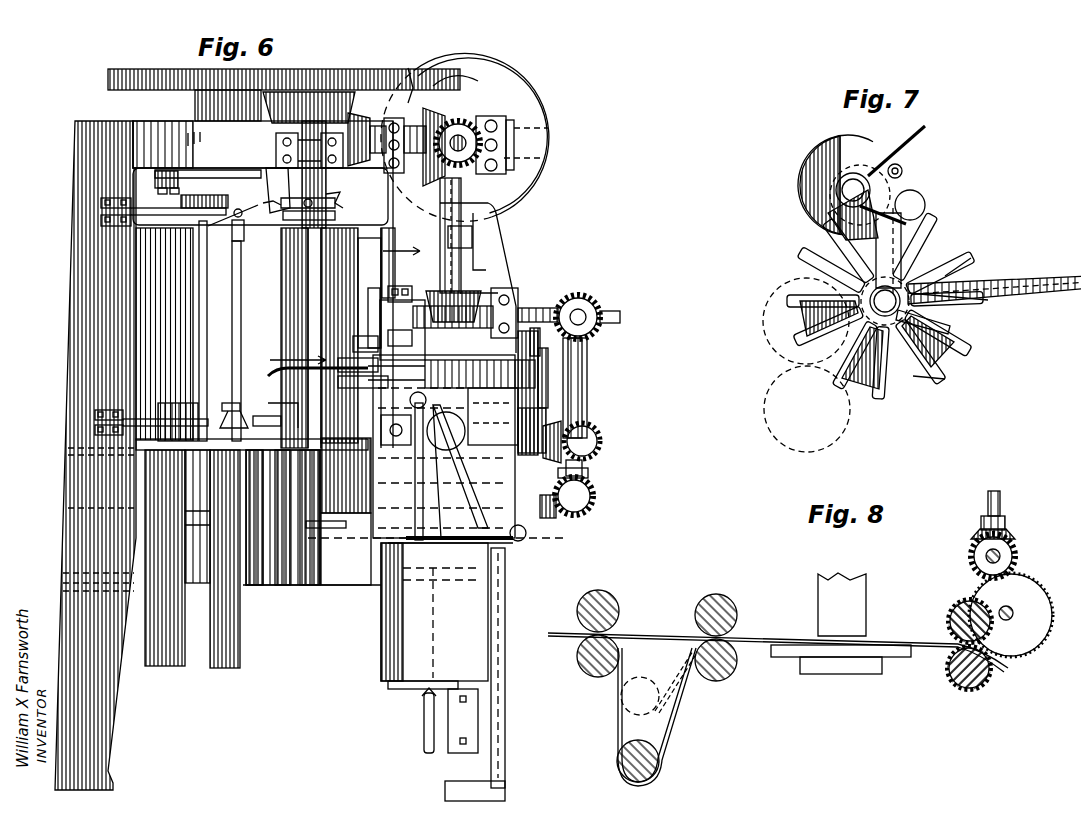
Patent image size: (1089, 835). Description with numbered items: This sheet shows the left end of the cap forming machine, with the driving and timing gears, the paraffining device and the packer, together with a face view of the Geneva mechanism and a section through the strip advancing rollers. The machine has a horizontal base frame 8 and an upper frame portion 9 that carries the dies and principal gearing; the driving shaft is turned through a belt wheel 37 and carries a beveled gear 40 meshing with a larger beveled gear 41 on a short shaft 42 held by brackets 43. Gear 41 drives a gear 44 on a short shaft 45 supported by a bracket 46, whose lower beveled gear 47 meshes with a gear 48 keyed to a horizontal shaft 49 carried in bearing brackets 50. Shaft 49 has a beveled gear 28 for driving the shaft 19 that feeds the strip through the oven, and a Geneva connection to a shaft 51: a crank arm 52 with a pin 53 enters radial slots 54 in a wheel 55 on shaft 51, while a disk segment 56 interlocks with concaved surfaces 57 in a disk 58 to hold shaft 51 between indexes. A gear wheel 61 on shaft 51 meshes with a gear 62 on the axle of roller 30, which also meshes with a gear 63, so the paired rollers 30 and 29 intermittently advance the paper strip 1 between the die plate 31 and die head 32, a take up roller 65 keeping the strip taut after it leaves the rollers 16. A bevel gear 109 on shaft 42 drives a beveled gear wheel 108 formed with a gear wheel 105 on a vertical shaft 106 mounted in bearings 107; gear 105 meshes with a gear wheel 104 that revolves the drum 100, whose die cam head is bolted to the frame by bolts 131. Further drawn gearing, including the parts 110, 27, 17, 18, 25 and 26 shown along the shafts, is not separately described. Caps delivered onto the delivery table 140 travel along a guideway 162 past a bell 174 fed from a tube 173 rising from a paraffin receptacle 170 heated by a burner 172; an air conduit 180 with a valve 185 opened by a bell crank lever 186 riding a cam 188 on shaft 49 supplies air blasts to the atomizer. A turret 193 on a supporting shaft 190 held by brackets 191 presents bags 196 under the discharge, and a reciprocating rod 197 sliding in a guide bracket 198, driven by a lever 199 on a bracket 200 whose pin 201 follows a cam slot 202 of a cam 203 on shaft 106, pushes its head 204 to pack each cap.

In FIG. 6, the gear wheel 104 is at (118, 60).
In FIG. 6, the gear wheel 105 is at (306, 59).
In FIG. 6, the beveled gear wheel 108 is at (205, 98).
In FIG. 6, the vertical shaft 106 is at (295, 243).
In FIG. 6, the upper frame portion 9 is at (67, 132).
In FIG. 6, the drum 100 is at (150, 339).
In FIG. 6, the bearing 107 is at (268, 134).
In FIG. 6, the bracket 200 is at (262, 178).
In FIG. 6, the pin 201 is at (316, 190).
In FIG. 6, the cam slot 202 is at (329, 204).
In FIG. 6, the cam 203 is at (333, 186).
In FIG. 6, the bolts 131 is at (153, 181).
In FIG. 6, the bracket 191 is at (125, 212).
In FIG. 6, the lever 199 is at (228, 207).
In FIG. 6, the reciprocating rod 197 is at (224, 260).
In FIG. 6, the supporting shaft 190 is at (191, 288).
In FIG. 6, the disk segment 56 is at (350, 286).
In FIG. 7, the disk segment 56 is at (820, 136).
In FIG. 6, the crank arm 52 is at (345, 308).
In FIG. 7, the crank arm 52 is at (894, 154).
In FIG. 6, the pin 53 is at (348, 331).
In FIG. 7, the pin 53 is at (917, 191).
In FIG. 6, the disk 58 is at (330, 354).
In FIG. 7, the disk 58 is at (935, 271).
In FIG. 6, the wheel 55 is at (335, 374).
In FIG. 7, the wheel 55 is at (895, 298).
In FIG. 6, the head 204 is at (225, 401).
In FIG. 6, the guide bracket 198 is at (240, 416).
In FIG. 6, the bell 174 is at (290, 408).
In FIG. 6, the turret 193 is at (100, 421).
In FIG. 6, the bags 196 is at (137, 467).
In FIG. 6, the guideway 162 is at (232, 516).
In FIG. 6, the delivery table 140 is at (338, 521).
In FIG. 6, the base frame 8 is at (340, 594).
In FIG. 6, the bevel gear 109 is at (420, 69).
In FIG. 6, the gear 110 is at (470, 73).
In FIG. 6, the belt wheel 37 is at (520, 96).
In FIG. 6, the beveled gear 41 is at (437, 116).
In FIG. 6, the beveled gear 40 is at (502, 143).
In FIG. 6, the bracket 43 is at (498, 111).
In FIG. 6, the short shaft 42 is at (545, 139).
In FIG. 6, the gear 44 is at (455, 181).
In FIG. 6, the short shaft 45 is at (453, 226).
In FIG. 8, the short shaft 45 is at (993, 493).
In FIG. 6, the bracket 46 is at (470, 238).
In FIG. 6, the beveled gear 47 is at (460, 280).
In FIG. 8, the beveled gear 47 is at (1005, 527).
In FIG. 6, the bearing bracket 50 is at (500, 279).
In FIG. 6, the bell crank lever 186 is at (390, 306).
In FIG. 7, the bell crank lever 186 is at (1038, 262).
In FIG. 6, the cam 188 is at (430, 302).
In FIG. 7, the cam 188 is at (894, 169).
In FIG. 6, the shaft 51 is at (470, 351).
In FIG. 7, the shaft 51 is at (892, 293).
In FIG. 6, the beveled gear 48 is at (508, 299).
In FIG. 8, the beveled gear 48 is at (1007, 548).
In FIG. 6, the horizontal shaft 49 is at (590, 299).
In FIG. 7, the horizontal shaft 49 is at (833, 177).
In FIG. 6, the shaft 27 is at (612, 306).
In FIG. 6, the beveled gear 28 is at (574, 330).
In FIG. 6, the gear 63 is at (532, 348).
In FIG. 8, the gear 63 is at (985, 608).
In FIG. 6, the feed roller 30 is at (530, 365).
In FIG. 7, the feed roller 30 is at (760, 318).
In FIG. 8, the feed roller 30 is at (940, 598).
In FIG. 6, the gear wheel 61 is at (545, 371).
In FIG. 8, the gear wheel 61 is at (968, 576).
In FIG. 6, the shaft 19 is at (579, 391).
In FIG. 6, the bevel gear 17 is at (556, 415).
In FIG. 6, the bevel gear 18 is at (590, 425).
In FIG. 6, the gear 62 is at (591, 460).
In FIG. 8, the gear 62 is at (965, 670).
In FIG. 6, the bevel gear 25 is at (585, 488).
In FIG. 6, the bevel gear 26 is at (538, 510).
In FIG. 6, the tube 173 is at (410, 465).
In FIG. 6, the valve 185 is at (455, 446).
In FIG. 6, the air conduit 180 is at (430, 501).
In FIG. 6, the receptacle 170 is at (395, 636).
In FIG. 6, the burner 172 is at (416, 708).
In FIG. 7, the slots 54 is at (900, 221).
In FIG. 7, the concaved surfaces 57 is at (945, 246).
In FIG. 8, the roller 16 is at (575, 667).
In FIG. 8, the feed roller 29 is at (729, 604).
In FIG. 8, the take up roller 65 is at (652, 748).
In FIG. 8, the strip 1 is at (698, 680).
In FIG. 8, the die head 32 is at (818, 594).
In FIG. 8, the die plate 31 is at (810, 656).